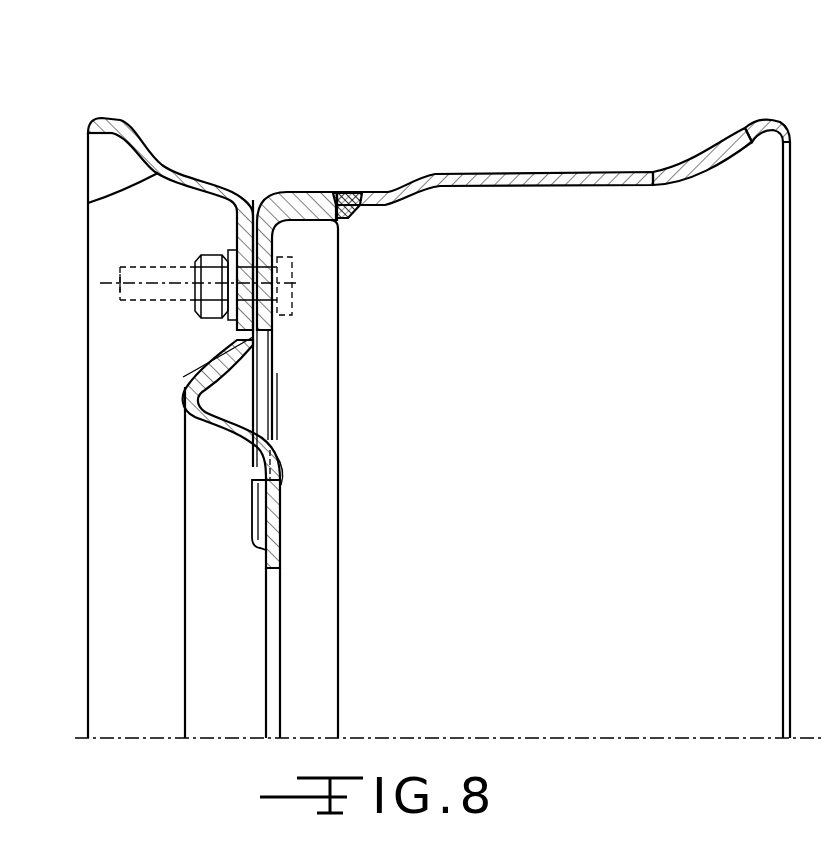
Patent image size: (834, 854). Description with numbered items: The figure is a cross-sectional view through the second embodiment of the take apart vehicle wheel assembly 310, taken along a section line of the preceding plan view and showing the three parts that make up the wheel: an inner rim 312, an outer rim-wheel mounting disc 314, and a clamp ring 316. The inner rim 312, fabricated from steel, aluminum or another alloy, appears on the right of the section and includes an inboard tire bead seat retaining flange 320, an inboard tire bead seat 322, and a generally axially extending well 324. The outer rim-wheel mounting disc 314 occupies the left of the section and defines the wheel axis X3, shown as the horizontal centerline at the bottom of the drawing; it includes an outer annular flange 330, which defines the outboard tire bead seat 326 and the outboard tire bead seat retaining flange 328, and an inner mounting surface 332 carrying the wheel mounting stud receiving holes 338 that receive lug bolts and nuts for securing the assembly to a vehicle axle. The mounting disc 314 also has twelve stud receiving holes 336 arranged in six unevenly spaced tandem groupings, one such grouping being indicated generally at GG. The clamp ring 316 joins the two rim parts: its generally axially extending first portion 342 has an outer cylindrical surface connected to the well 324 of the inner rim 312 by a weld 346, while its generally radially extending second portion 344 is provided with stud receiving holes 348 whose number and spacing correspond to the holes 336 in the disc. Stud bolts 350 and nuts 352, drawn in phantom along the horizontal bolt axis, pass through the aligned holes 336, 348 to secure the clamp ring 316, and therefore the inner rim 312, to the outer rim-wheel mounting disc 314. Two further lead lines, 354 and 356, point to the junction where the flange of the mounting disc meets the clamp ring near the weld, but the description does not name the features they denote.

The take apart vehicle wheel assembly 310 is at (116, 64).
The inner rim 312 is at (650, 205).
The outer rim-wheel mounting disc 314 is at (198, 424).
The clamp ring 316 is at (290, 233).
The inboard tire bead seat retaining flange 320 is at (780, 124).
The inboard tire bead seat 322 is at (720, 153).
The well 324 is at (402, 184).
The outboard tire bead seat 326 is at (174, 168).
The outboard tire bead seat retaining flange 328 is at (105, 119).
The outer annular flange 330 is at (88, 202).
The inner mounting surface 332 is at (280, 472).
The stud receiving holes 336 is at (233, 280).
The wheel mounting stud receiving holes 338 is at (265, 518).
The first portion 342 is at (322, 217).
The second portion 344 is at (272, 330).
The weld 346 is at (363, 192).
The stud receiving holes 348 is at (268, 262).
The stud bolts 350 is at (138, 278).
The nuts 352 is at (213, 258).
The interface 354 is at (256, 185).
The flange 356 is at (268, 197).
The tandem grouping of stud receiving holes GG is at (210, 330).
The axis X3 is at (472, 737).